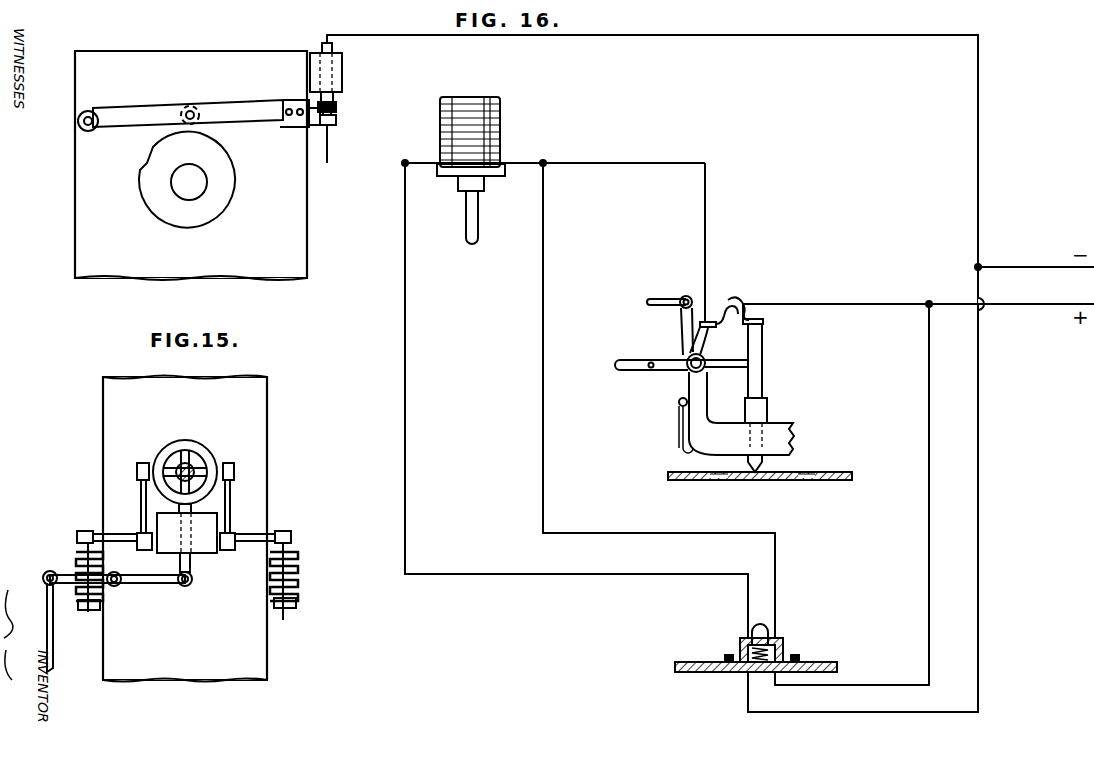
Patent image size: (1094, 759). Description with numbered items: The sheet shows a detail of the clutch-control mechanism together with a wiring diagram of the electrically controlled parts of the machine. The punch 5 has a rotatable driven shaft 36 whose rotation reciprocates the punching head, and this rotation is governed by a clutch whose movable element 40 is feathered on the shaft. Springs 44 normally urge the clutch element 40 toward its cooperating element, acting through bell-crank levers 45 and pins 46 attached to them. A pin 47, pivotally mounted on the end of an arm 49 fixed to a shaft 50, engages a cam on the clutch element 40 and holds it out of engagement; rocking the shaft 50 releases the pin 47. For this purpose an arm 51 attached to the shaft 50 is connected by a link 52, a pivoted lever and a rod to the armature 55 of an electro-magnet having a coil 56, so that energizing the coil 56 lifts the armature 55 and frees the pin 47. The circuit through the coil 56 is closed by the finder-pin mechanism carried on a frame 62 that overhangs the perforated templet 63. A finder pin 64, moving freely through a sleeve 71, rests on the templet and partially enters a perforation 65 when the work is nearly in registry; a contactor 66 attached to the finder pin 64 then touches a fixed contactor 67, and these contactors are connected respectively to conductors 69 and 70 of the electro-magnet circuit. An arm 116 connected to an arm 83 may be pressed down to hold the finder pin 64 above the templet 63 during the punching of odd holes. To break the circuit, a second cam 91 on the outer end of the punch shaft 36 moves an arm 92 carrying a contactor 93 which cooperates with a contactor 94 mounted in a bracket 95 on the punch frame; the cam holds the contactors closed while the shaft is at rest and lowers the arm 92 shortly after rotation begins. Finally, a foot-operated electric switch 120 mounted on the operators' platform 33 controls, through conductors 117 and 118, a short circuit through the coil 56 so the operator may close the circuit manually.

In FIG. 16, the punch 5 is at (290, 252).
In FIG. 16, the second cam 91 is at (153, 184).
In FIG. 16, the driven shaft 36 is at (183, 192).
In FIG. 15, the driven shaft 36 is at (190, 463).
In FIG. 16, the arm 92 is at (161, 112).
In FIG. 16, the bracket 95 is at (342, 63).
In FIG. 16, the contactor 94 is at (336, 98).
In FIG. 16, the contactor 93 is at (338, 109).
In FIG. 16, the coil 56 is at (500, 128).
In FIG. 16, the armature 55 is at (484, 183).
In FIG. 16, the conductor 70 is at (707, 200).
In FIG. 16, the fixed contactor 67 is at (726, 294).
In FIG. 16, the electric contactor 66 is at (736, 300).
In FIG. 16, the conductor 69 is at (836, 289).
In FIG. 16, the arm 83 is at (681, 329).
In FIG. 16, the arm 116 is at (637, 369).
In FIG. 16, the finder pin 64 is at (763, 388).
In FIG. 16, the sleeve 71 is at (768, 410).
In FIG. 16, the frame 62 is at (793, 440).
In FIG. 16, the perforated templet 63 is at (840, 472).
In FIG. 16, the perforations 65 is at (806, 482).
In FIG. 16, the conductor 117 is at (929, 504).
In FIG. 16, the conductor 118 is at (978, 501).
In FIG. 16, the foot-operated electric switch 120 is at (770, 630).
In FIG. 16, the operators' platform 33 is at (824, 662).
In FIG. 15, the movable clutch element 40 is at (173, 458).
In FIG. 15, the pins 46 is at (219, 463).
In FIG. 15, the pin 47 is at (193, 510).
In FIG. 15, the bell-crank levers 45 is at (233, 513).
In FIG. 15, the springs 44 is at (76, 564).
In FIG. 15, the arm 49 is at (158, 586).
In FIG. 15, the shaft 50 is at (117, 588).
In FIG. 15, the arm 51 is at (52, 569).
In FIG. 15, the link 52 is at (46, 597).